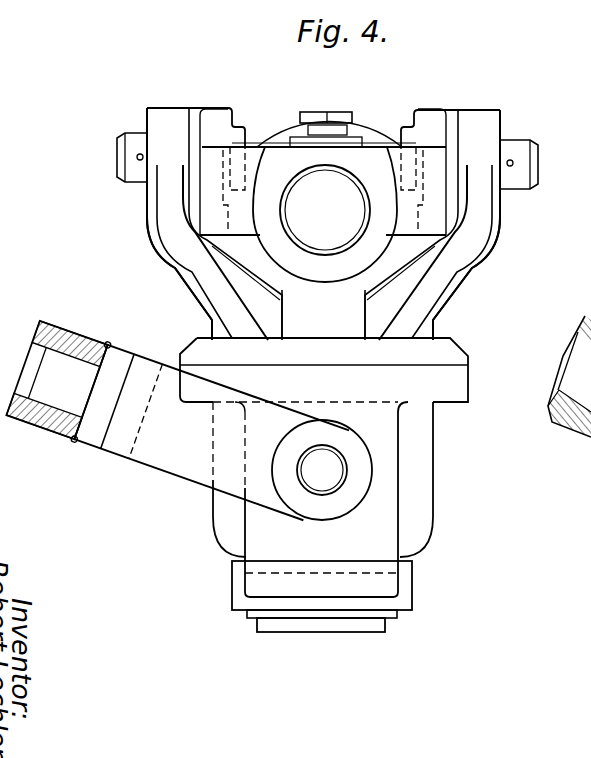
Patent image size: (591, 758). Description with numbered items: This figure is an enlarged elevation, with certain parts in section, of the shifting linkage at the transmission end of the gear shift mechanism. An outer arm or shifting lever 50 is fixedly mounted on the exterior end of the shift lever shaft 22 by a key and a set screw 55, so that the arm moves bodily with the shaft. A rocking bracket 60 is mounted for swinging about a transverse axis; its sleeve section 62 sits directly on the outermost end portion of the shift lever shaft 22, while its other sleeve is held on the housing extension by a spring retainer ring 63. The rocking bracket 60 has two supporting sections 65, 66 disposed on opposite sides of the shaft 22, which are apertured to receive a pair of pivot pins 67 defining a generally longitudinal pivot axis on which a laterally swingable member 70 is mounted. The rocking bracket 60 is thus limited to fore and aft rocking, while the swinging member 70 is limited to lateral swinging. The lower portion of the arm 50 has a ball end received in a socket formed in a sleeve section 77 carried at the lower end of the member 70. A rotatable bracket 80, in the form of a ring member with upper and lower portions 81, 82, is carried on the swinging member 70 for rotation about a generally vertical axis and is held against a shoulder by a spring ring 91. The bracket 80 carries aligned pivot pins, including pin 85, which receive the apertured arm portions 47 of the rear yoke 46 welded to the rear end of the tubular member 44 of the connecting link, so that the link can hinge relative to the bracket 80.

The shift lever shaft 22 is at (330, 243).
The tubular member 44 is at (62, 363).
The rear yoke 46 is at (99, 420).
The arm portions 47 is at (199, 468).
The outer arm 50 is at (332, 330).
The set screw 55 is at (333, 121).
The rocking bracket 60 is at (254, 160).
The sleeve section 62 is at (297, 157).
The spring retainer ring 63 is at (363, 132).
The supporting section 65 is at (213, 113).
The supporting section 66 is at (438, 118).
The pivot pins 67 is at (120, 156).
The laterally swingable member 70 is at (182, 284).
The sleeve section 77 is at (303, 628).
The rotatable bracket 80 is at (403, 509).
The upper portion 81 is at (453, 375).
The lower portion 82 is at (405, 588).
The pivot pin 85 is at (331, 462).
The spring ring 91 is at (350, 615).